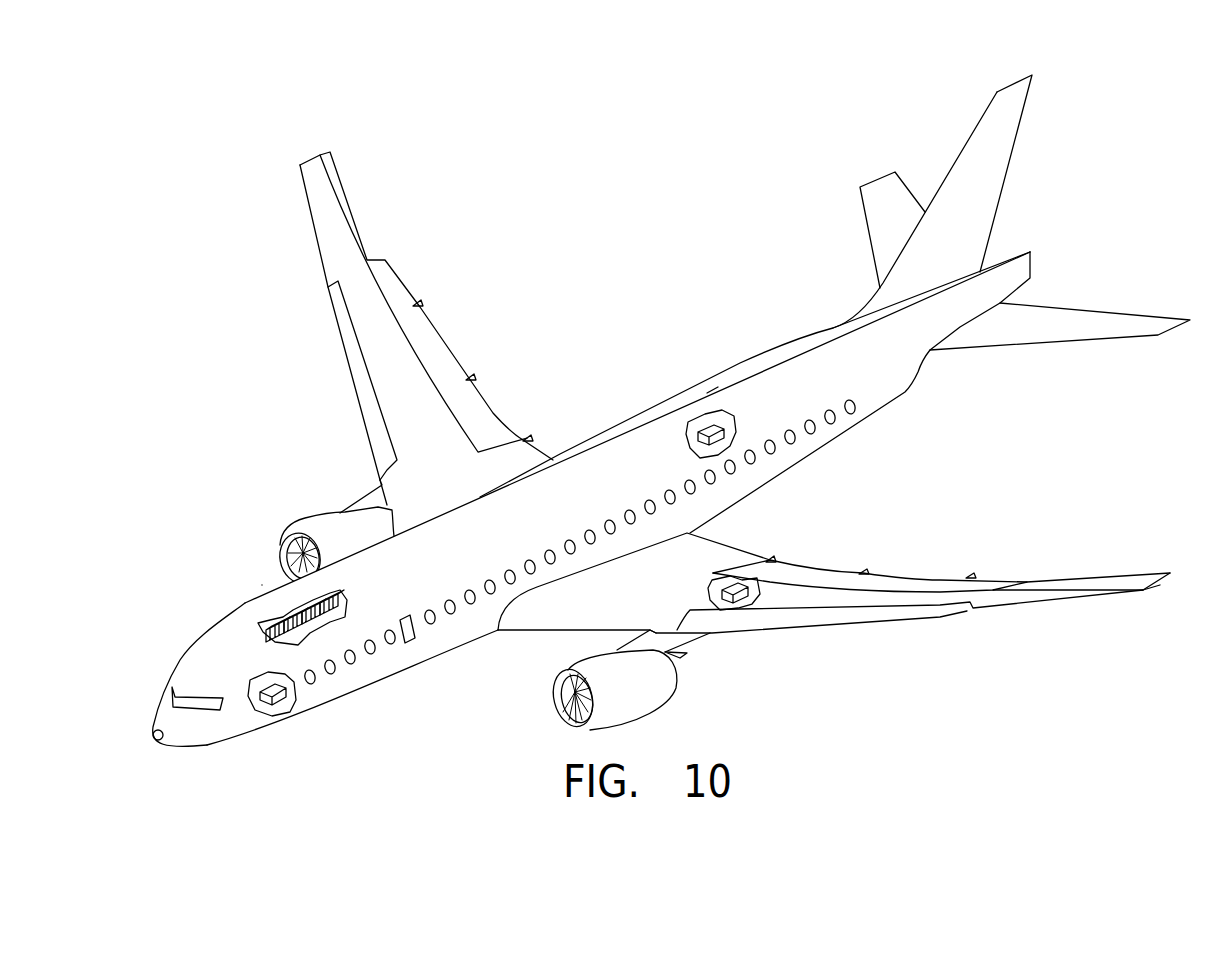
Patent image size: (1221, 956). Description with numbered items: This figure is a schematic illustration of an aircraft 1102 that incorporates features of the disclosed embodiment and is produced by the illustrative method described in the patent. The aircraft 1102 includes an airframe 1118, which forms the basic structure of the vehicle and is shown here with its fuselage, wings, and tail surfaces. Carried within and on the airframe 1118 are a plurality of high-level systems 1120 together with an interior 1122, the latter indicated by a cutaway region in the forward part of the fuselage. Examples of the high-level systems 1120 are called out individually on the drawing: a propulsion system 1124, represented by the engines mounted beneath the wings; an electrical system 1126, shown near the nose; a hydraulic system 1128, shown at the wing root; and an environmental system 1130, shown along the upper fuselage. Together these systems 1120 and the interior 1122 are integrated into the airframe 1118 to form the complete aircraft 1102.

The aircraft 1102 is at (275, 328).
The airframe 1118 is at (260, 582).
The high-level systems 1120 is at (710, 292).
The interior 1122 is at (309, 636).
The propulsion system 1124 is at (316, 514).
The electrical system 1126 is at (268, 690).
The hydraulic system 1128 is at (733, 583).
The environmental system 1130 is at (706, 421).